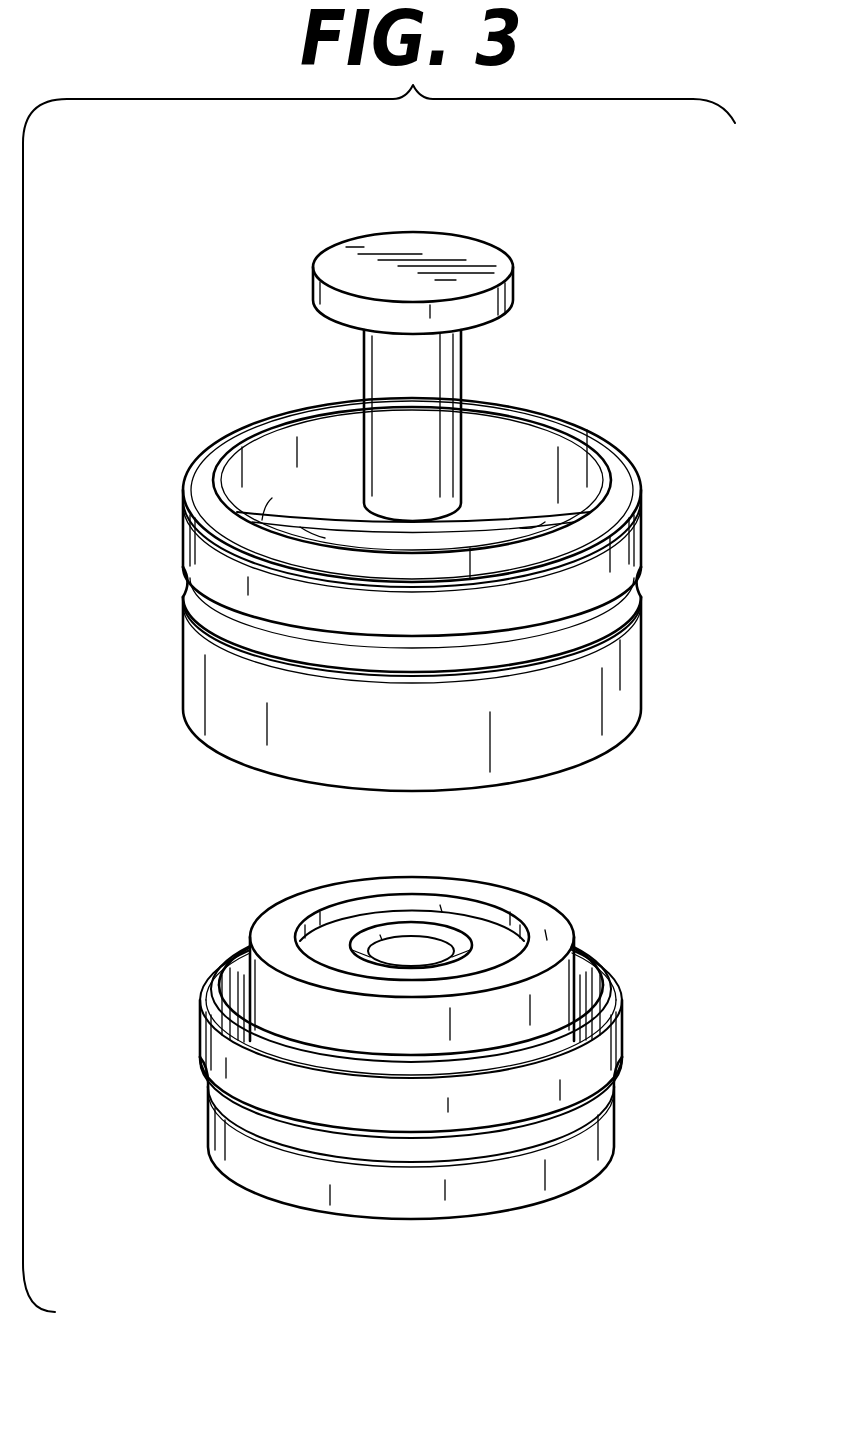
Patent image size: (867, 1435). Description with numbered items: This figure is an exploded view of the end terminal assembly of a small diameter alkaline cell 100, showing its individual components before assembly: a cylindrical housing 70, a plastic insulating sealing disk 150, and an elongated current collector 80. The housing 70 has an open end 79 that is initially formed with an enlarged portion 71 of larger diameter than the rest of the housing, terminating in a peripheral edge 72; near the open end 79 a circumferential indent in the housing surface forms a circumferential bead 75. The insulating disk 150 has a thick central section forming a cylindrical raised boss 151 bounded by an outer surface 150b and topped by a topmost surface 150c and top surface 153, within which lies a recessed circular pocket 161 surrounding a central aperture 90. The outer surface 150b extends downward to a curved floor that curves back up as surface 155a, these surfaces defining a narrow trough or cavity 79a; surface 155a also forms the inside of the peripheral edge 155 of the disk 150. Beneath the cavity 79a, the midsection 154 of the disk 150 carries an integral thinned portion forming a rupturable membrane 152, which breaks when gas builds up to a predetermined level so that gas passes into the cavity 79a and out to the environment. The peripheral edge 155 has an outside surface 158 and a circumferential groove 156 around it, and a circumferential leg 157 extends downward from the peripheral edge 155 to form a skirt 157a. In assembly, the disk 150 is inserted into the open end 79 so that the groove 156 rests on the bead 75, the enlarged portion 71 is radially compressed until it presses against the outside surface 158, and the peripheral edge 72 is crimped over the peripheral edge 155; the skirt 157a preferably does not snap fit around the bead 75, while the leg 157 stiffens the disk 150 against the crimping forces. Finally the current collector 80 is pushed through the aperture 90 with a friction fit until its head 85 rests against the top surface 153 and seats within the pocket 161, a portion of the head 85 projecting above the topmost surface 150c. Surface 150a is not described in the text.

The alkaline cell 100 is at (650, 680).
The head 85 is at (473, 258).
The current collector 80 is at (468, 362).
The open end 79 is at (267, 417).
The peripheral edge 72 is at (620, 486).
The enlarged portion 71 is at (625, 555).
The circumferential bead 75 is at (590, 622).
The housing 70 is at (197, 672).
The insulating sealing disk 150 is at (278, 908).
The disc top surface 150a is at (513, 905).
The outer surface 150b is at (563, 982).
The topmost surface 150c is at (562, 923).
The top surface 153 is at (325, 928).
The pocket 161 is at (360, 900).
The central aperture 90 is at (410, 957).
The raised boss 151 is at (243, 983).
The cavity 79a is at (245, 985).
The midsection 154 is at (240, 1002).
The surface 155a is at (595, 993).
The rupturable membrane 152 is at (607, 1020).
The peripheral edge 155 is at (608, 1062).
The outside surface 158 is at (612, 1070).
The circumferential groove 156 is at (213, 1097).
The leg 157 is at (270, 1172).
The skirt 157a is at (227, 1148).